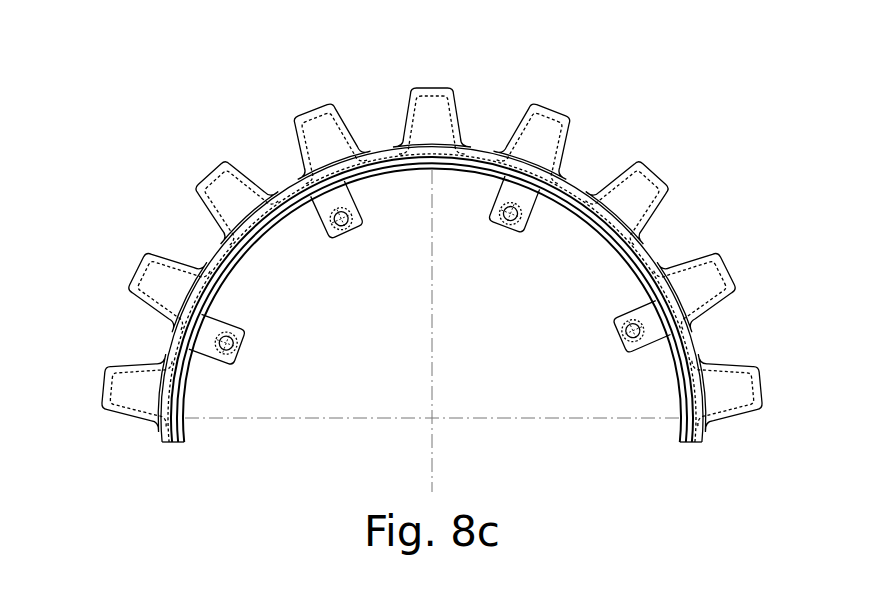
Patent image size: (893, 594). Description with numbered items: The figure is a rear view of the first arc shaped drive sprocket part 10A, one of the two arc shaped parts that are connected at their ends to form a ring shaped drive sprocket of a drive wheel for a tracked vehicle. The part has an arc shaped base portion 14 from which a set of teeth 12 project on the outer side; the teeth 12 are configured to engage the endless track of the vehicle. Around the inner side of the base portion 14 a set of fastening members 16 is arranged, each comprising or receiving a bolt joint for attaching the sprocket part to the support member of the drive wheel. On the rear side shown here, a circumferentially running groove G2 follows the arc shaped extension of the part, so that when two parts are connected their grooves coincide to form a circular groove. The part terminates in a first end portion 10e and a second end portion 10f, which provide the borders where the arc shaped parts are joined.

The first arc shaped drive sprocket part 10A is at (417, 285).
The teeth 12 is at (441, 83).
The base portion 14 is at (160, 337).
The fastening members 16 is at (358, 243).
The groove G2 is at (640, 246).
The first end portion 10e is at (168, 443).
The second end portion 10f is at (693, 445).